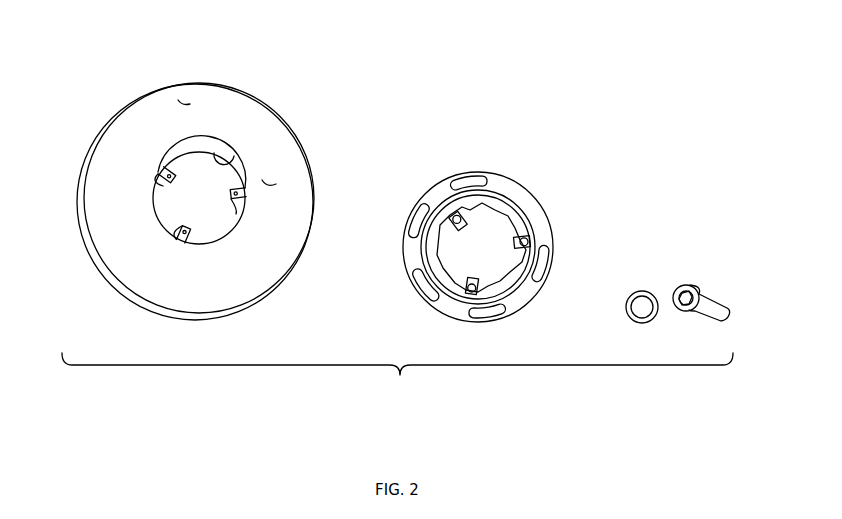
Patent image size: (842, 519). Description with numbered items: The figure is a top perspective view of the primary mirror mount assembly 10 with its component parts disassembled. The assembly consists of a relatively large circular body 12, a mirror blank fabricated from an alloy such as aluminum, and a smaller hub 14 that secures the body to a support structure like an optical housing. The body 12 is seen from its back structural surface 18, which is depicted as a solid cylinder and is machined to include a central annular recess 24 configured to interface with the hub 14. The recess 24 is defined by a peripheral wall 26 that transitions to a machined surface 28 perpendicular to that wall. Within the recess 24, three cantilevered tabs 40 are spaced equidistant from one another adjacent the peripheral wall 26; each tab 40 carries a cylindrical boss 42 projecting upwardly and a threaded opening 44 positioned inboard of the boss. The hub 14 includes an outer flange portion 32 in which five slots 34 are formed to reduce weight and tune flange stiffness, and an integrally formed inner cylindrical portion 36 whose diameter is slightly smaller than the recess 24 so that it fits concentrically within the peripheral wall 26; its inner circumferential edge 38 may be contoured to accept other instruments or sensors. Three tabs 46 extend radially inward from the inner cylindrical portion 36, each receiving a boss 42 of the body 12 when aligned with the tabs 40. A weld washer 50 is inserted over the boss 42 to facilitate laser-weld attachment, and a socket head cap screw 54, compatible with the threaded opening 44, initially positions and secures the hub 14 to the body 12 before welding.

The primary mirror mount assembly 10 is at (404, 388).
The body 12 is at (136, 93).
The hub 14 is at (528, 176).
The back structural surface 18 is at (184, 100).
The central annular recess 24 is at (224, 157).
The peripheral wall 26 is at (234, 172).
The machined surface 28 is at (265, 180).
The outer flange portion 32 is at (538, 211).
The slots 34 is at (478, 174).
The inner cylindrical portion 36 is at (428, 250).
The inner circumferential edge 38 is at (512, 292).
The cantilevered tabs 40 is at (173, 181).
The cylindrical boss 42 is at (169, 175).
The threaded opening 44 is at (168, 184).
The tabs 46 is at (462, 226).
The weld washer 50 is at (643, 291).
The screw 54 is at (700, 289).